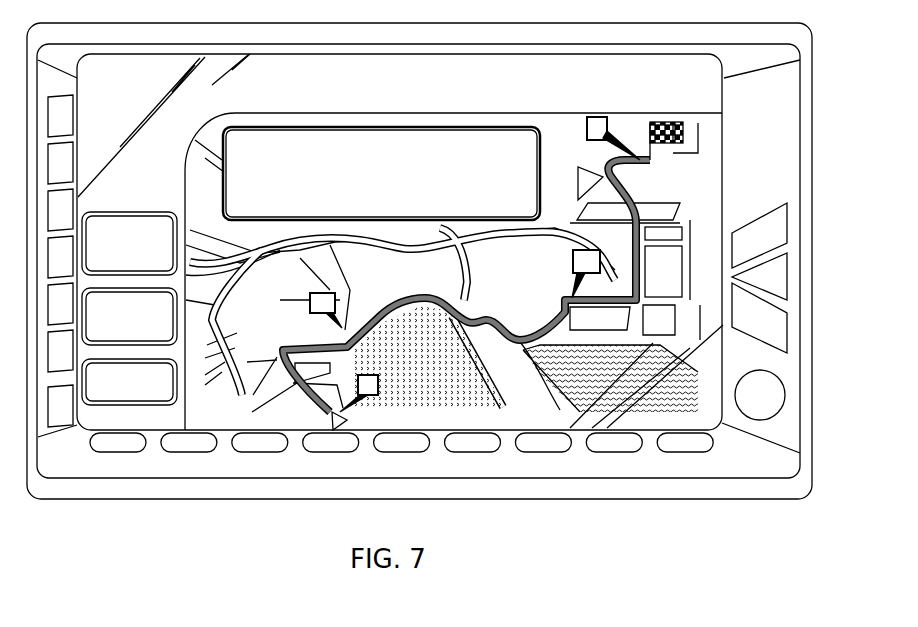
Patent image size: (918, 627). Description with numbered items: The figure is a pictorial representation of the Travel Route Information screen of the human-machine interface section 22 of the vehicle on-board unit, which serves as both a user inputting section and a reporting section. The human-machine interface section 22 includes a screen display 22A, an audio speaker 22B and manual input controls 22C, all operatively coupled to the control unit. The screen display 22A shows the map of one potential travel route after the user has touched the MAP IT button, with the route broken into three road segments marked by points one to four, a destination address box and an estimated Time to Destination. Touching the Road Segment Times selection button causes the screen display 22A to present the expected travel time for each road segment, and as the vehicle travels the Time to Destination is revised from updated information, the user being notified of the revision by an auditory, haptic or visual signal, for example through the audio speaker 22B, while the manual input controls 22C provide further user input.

The human-machine interface section 22 is at (419, 289).
The screen display 22A is at (165, 410).
The audio speaker 22B is at (762, 420).
The manual input controls 22C is at (610, 445).